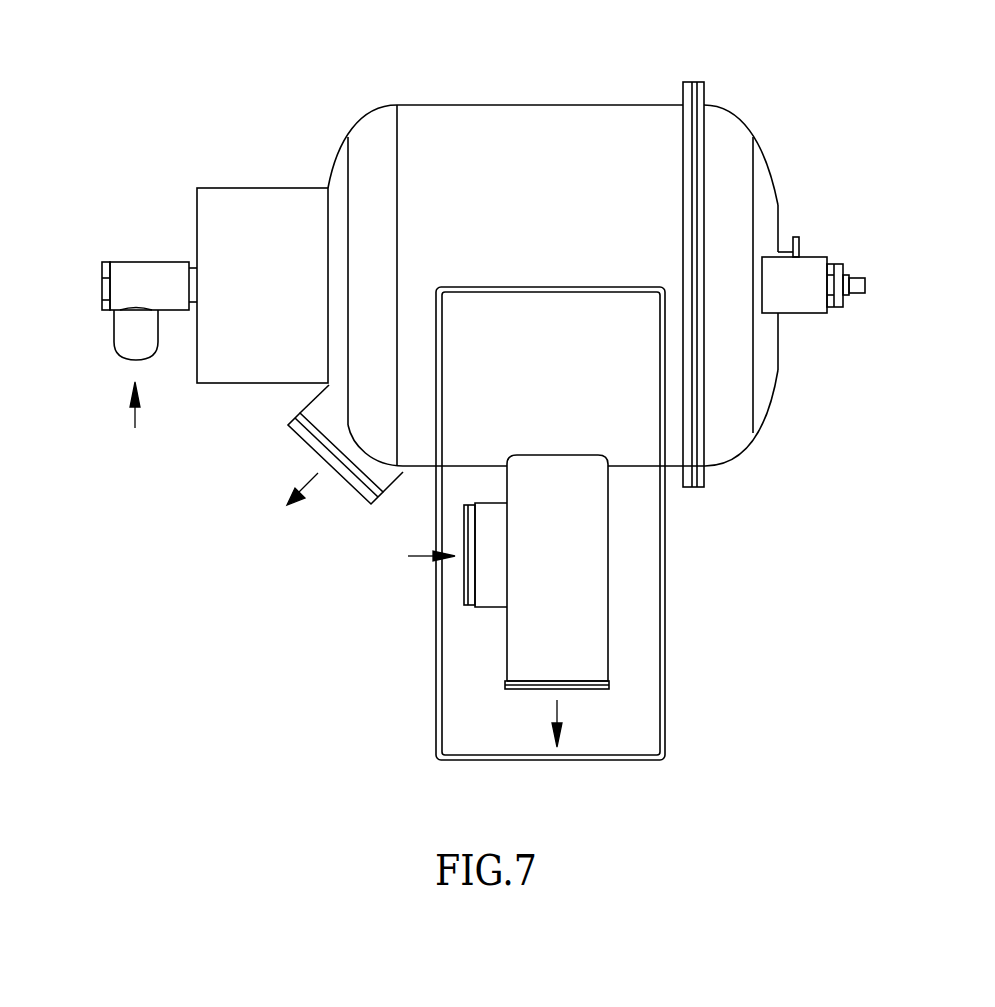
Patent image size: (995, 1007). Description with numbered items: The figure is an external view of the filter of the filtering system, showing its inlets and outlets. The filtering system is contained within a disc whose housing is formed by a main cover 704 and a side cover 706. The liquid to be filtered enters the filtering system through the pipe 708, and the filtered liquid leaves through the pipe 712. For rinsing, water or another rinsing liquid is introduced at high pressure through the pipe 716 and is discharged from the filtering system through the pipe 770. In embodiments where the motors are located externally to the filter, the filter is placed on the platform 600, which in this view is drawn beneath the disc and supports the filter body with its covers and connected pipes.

The main cover 704 is at (550, 120).
The side cover 706 is at (725, 122).
The pipe 708 is at (492, 592).
The pipe 712 is at (368, 465).
The pipe 716 is at (120, 337).
The platform 600 is at (660, 583).
The pipe 770 is at (588, 665).